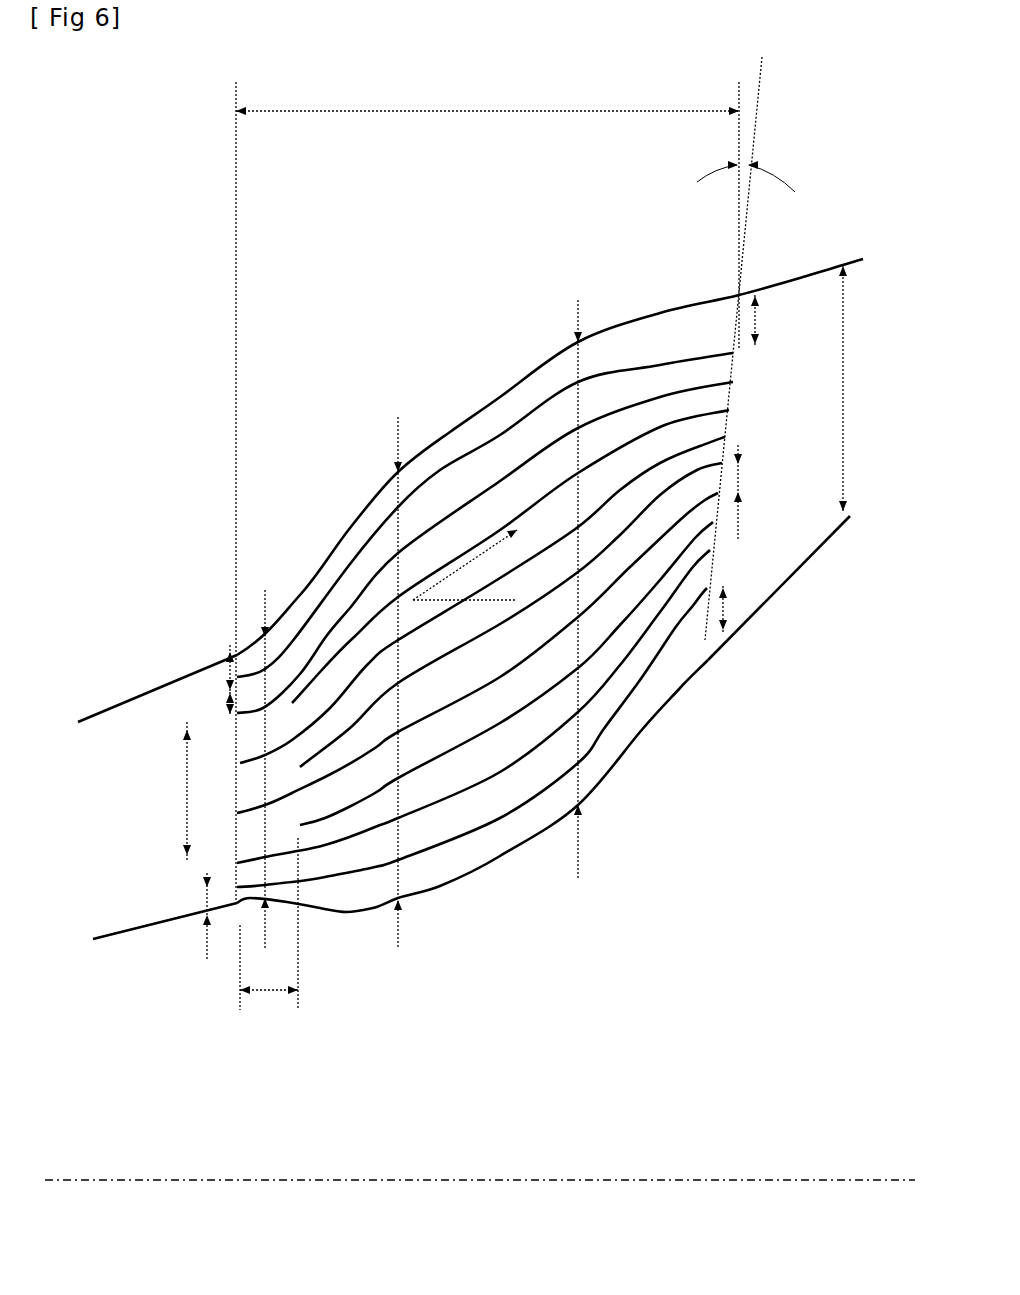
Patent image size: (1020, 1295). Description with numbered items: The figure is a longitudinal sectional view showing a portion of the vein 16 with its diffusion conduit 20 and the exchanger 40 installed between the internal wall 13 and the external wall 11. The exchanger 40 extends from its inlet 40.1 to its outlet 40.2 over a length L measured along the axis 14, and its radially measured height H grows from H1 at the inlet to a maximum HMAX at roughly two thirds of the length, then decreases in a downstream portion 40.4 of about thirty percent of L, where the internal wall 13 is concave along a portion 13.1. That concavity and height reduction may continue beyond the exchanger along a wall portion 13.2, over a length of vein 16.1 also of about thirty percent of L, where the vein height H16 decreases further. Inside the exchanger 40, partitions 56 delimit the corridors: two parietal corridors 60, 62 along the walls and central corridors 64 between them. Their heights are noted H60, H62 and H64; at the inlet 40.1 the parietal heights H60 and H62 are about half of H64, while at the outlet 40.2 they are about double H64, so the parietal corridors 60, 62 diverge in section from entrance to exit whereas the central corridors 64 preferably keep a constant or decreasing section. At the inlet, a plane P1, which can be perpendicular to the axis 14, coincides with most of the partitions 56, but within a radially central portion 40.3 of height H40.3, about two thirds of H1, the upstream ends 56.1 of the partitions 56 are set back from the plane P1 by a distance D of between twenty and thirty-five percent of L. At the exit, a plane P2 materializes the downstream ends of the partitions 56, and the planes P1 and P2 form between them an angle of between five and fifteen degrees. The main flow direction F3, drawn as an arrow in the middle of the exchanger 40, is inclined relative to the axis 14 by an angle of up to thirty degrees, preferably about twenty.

The external wall 11 is at (97, 708).
The internal wall 13 is at (118, 938).
The concave portion of the internal wall 13.1 is at (665, 720).
The downstream wall portion 13.2 is at (878, 680).
The axis 14 is at (65, 1180).
The vein 16 is at (816, 432).
The vein portion 16.1 is at (811, 724).
The diffusion conduit 20 is at (84, 837).
The exchanger 40 is at (750, 795).
The inlet of the exchanger 40.1 is at (217, 612).
The outlet of the exchanger 40.2 is at (790, 268).
The set-back portion 40.3 is at (183, 722).
The downstream portion of the exchanger 40.4 is at (710, 872).
The partitions 56 is at (418, 813).
The upstream end of the partitions 56.1 is at (237, 862).
The parietal corridor 60 is at (500, 848).
The parietal corridor 62 is at (445, 437).
The central corridors 64 is at (496, 476).
The plane P1 is at (237, 885).
The plane P2 is at (709, 662).
The length of the exchanger L is at (487, 490).
The height of the exchanger H is at (387, 682).
The inlet height H1 is at (268, 755).
The maximum height HMAX is at (543, 589).
The vein height H16 is at (869, 388).
The height of corridor 60 H60 is at (459, 775).
The height of corridor 62 H62 is at (492, 493).
The height of the central corridors H64 is at (492, 580).
The height of portion 40.3 H40.3 is at (207, 792).
The set-back distance D is at (269, 934).
The main flow direction F3 is at (469, 565).